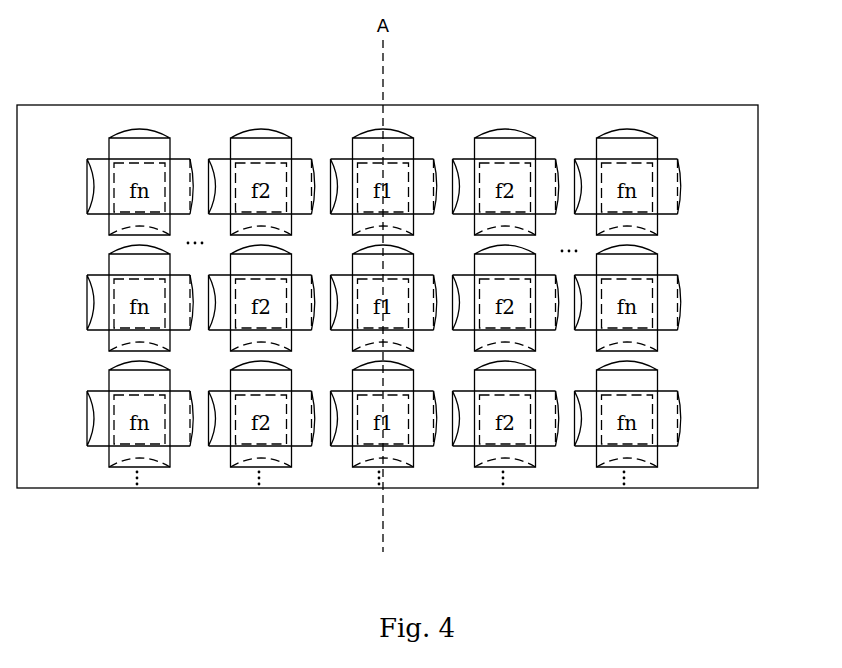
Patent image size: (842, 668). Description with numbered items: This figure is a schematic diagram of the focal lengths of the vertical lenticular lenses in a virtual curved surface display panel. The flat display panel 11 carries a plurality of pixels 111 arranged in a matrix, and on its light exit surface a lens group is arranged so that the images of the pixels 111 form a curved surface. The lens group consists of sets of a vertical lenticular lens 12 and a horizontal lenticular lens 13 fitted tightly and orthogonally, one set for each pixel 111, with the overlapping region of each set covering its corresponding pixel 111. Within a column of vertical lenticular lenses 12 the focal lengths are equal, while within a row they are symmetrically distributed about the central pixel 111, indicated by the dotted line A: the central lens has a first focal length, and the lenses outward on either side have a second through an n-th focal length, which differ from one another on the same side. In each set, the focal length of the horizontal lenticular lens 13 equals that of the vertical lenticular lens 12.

The flat display panel 11 is at (750, 253).
The vertical lenticular lens 12 is at (650, 147).
The horizontal lenticular lens 13 is at (665, 210).
The pixel 111 is at (650, 180).